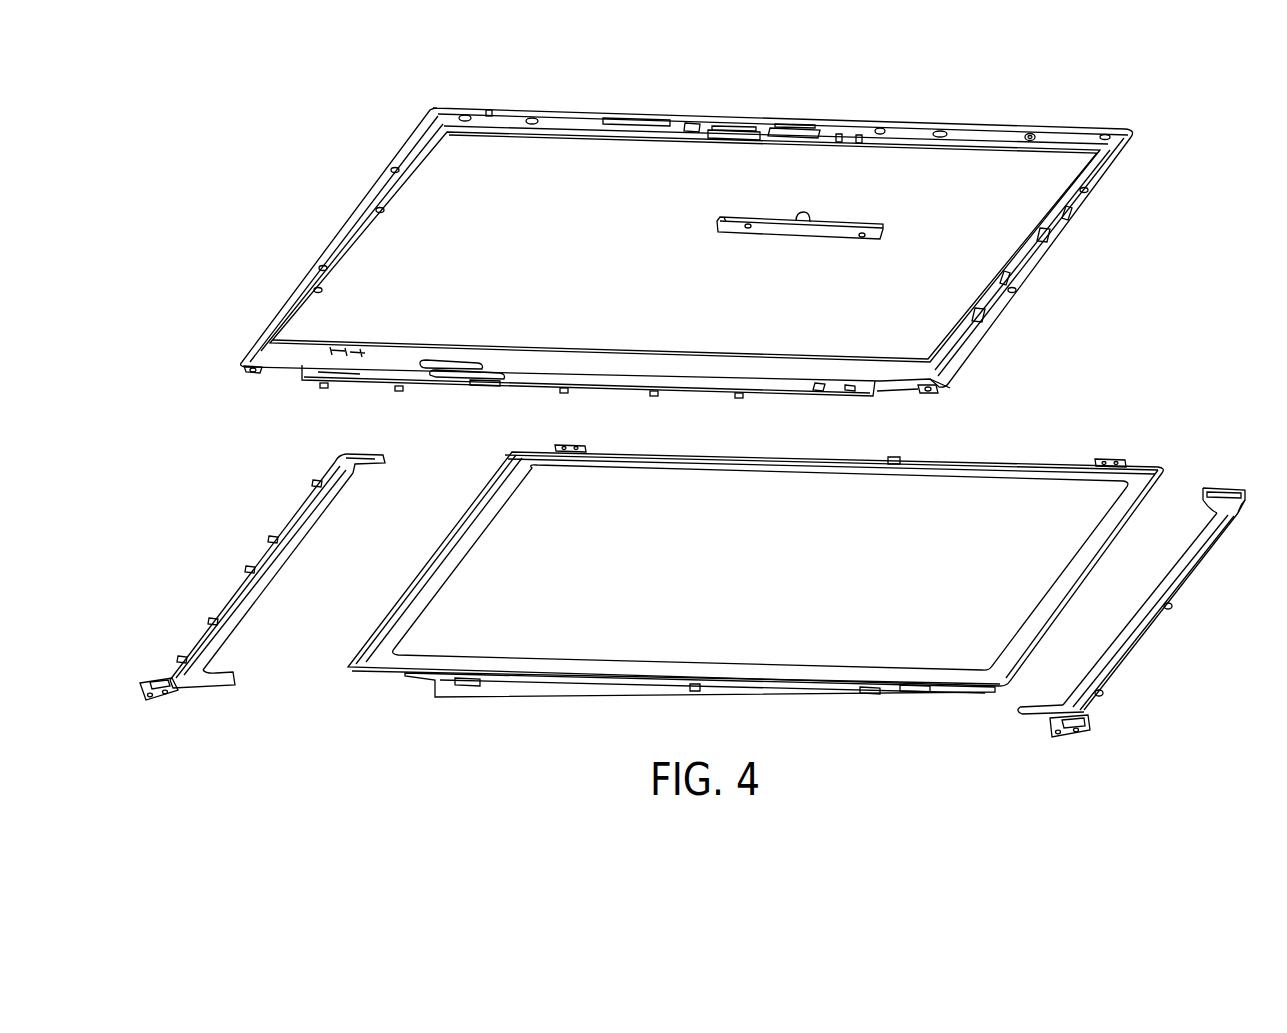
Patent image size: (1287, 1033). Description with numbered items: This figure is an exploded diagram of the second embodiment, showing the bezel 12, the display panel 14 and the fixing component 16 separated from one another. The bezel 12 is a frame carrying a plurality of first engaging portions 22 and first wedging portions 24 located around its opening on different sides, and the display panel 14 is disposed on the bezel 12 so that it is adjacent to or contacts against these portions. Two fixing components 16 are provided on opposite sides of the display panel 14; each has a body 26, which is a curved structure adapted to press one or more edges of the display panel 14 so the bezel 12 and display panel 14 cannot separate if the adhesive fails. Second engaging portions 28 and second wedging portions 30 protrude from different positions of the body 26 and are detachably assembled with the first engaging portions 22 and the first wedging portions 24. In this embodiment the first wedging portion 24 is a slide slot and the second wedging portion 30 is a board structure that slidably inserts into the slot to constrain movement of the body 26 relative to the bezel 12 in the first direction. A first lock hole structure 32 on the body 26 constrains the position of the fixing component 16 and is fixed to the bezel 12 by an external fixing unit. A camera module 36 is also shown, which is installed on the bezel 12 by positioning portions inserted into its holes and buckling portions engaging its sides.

The bezel 12 is at (982, 133).
The display panel 14 is at (918, 647).
The fixing component 16 is at (274, 588).
The first engaging portion 22 is at (1048, 240).
The first wedging portion 24 is at (1034, 136).
The body 26 is at (870, 366).
The second engaging portion 28 is at (270, 538).
The second wedging portion 30 is at (368, 470).
The first lock hole structure 32 is at (148, 702).
The camera module 36 is at (790, 232).